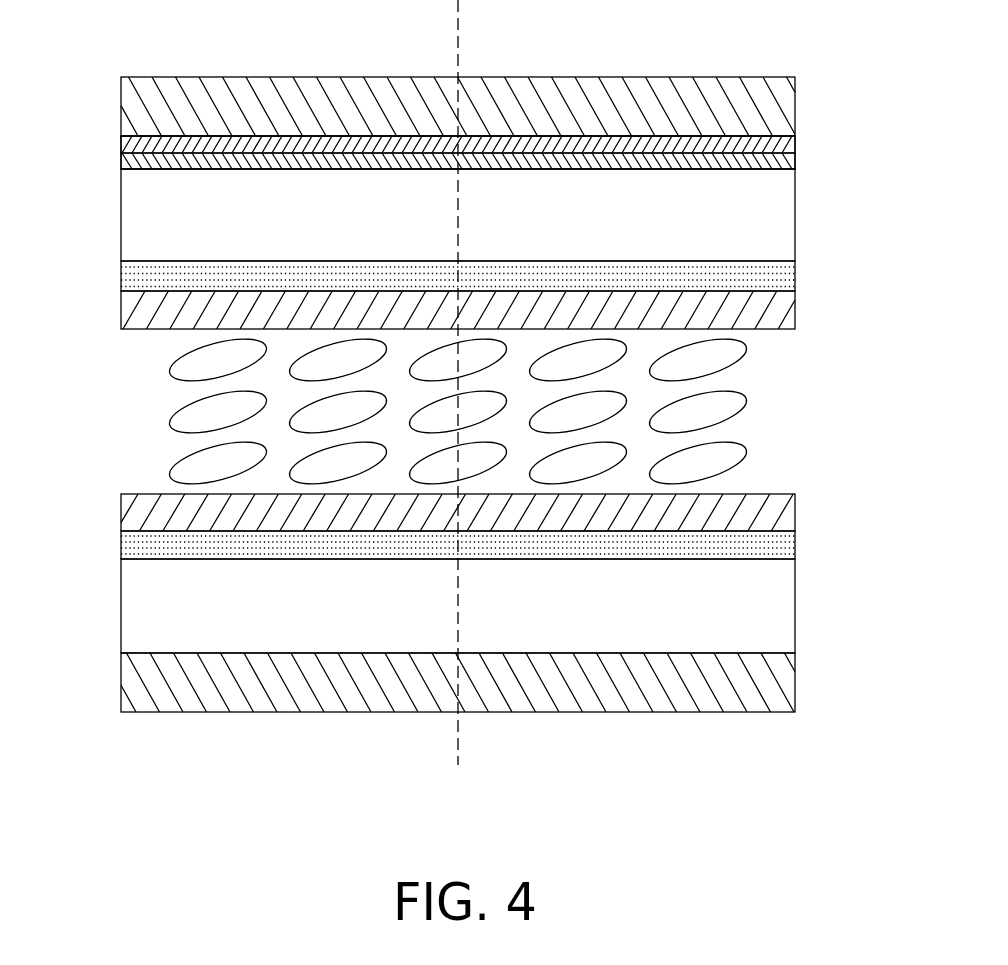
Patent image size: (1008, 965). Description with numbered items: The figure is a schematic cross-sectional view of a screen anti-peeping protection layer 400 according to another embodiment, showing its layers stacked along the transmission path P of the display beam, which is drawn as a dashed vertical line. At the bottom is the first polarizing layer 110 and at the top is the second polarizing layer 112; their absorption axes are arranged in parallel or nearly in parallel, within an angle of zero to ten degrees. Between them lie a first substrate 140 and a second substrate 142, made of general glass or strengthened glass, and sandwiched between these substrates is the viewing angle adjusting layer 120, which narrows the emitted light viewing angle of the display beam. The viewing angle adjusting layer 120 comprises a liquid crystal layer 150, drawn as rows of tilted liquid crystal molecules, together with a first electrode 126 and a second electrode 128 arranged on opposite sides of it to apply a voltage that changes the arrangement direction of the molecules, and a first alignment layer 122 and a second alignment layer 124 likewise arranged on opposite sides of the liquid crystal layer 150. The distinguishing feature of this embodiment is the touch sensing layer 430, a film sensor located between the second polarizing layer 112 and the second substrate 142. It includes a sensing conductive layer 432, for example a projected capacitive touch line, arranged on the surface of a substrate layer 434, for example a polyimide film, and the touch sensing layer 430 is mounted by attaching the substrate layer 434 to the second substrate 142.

The first polarizing layer 110 is at (795, 680).
The second polarizing layer 112 is at (795, 106).
The viewing angle adjusting layer 120 is at (460, 413).
The first alignment layer 122 is at (118, 517).
The second alignment layer 124 is at (118, 318).
The first electrode 126 is at (118, 549).
The second electrode 128 is at (118, 283).
The first substrate 140 is at (795, 605).
The second substrate 142 is at (795, 210).
The liquid crystal layer 150 is at (112, 422).
The screen anti-peeping protection layer 400 is at (793, 769).
The touch sensing layer 430 is at (460, 154).
The sensing conductive layer 432 is at (120, 144).
The substrate layer 434 is at (120, 162).
The transmission path P is at (462, 27).